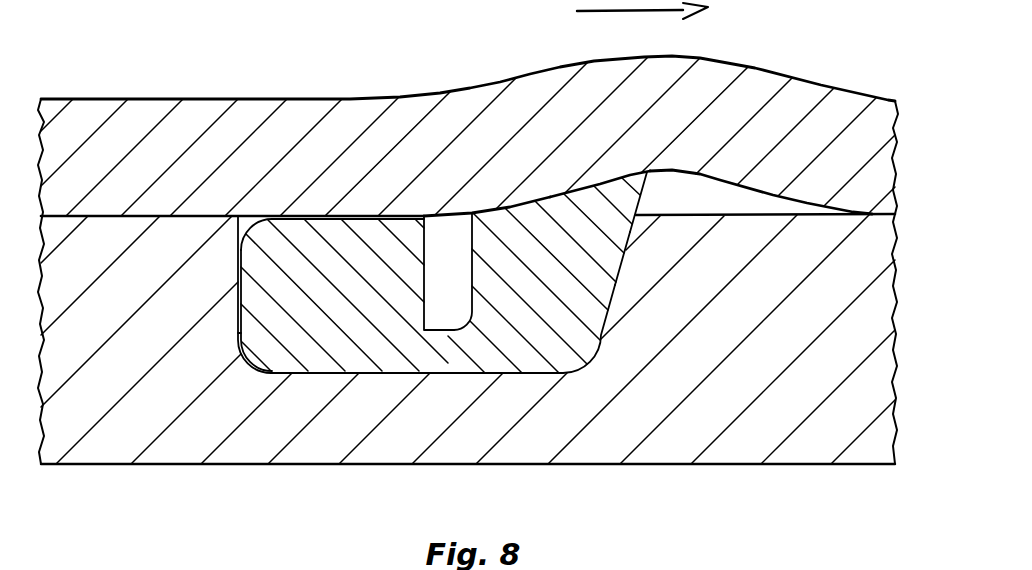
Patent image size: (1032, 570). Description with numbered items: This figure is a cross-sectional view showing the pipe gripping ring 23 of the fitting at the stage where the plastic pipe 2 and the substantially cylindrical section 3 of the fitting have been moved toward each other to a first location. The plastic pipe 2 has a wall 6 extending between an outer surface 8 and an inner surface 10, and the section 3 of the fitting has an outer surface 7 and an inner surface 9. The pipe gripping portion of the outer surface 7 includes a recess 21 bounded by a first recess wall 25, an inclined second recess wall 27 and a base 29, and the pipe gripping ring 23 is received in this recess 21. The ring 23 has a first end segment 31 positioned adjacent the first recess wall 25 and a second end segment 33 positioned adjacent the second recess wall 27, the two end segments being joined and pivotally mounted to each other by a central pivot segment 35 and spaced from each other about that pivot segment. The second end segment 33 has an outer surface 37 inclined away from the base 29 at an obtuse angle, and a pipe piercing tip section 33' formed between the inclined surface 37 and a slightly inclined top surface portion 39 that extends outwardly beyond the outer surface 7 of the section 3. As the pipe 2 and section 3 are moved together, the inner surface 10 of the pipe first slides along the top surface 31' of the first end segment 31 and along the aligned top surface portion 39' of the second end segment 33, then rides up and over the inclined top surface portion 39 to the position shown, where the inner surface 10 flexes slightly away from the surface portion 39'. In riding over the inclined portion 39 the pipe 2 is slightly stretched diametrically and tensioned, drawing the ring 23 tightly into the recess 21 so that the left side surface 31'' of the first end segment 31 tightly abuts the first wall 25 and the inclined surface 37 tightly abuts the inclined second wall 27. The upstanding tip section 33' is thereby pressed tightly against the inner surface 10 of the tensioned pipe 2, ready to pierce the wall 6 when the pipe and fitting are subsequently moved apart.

The plastic pipe 2 is at (207, 92).
The section of the fitting 3 is at (705, 374).
The wall 6 is at (446, 174).
The outer surface of the section 7 is at (710, 212).
The outer surface of the pipe 8 is at (98, 98).
The inner surface of the section 9 is at (762, 466).
The inner surface of the pipe 10 is at (100, 218).
The recess 21 is at (226, 335).
The pipe gripping ring 23 is at (378, 236).
The first recess wall 25 is at (238, 289).
The second recess wall 27 is at (620, 291).
The base of the recess 29 is at (328, 375).
The first end segment 31 is at (344, 295).
The top surface of the first end segment 31' is at (332, 198).
The left side surface of the first end segment 31'' is at (272, 310).
The second end segment 33 is at (544, 275).
The tip section 33' is at (624, 175).
The central pivot segment 35 is at (445, 352).
The inclined outer surface of the second end segment 37 is at (617, 262).
The inclined top surface portion of the second end segment 39 is at (600, 166).
The top surface portion of the second end segment 39' is at (487, 184).